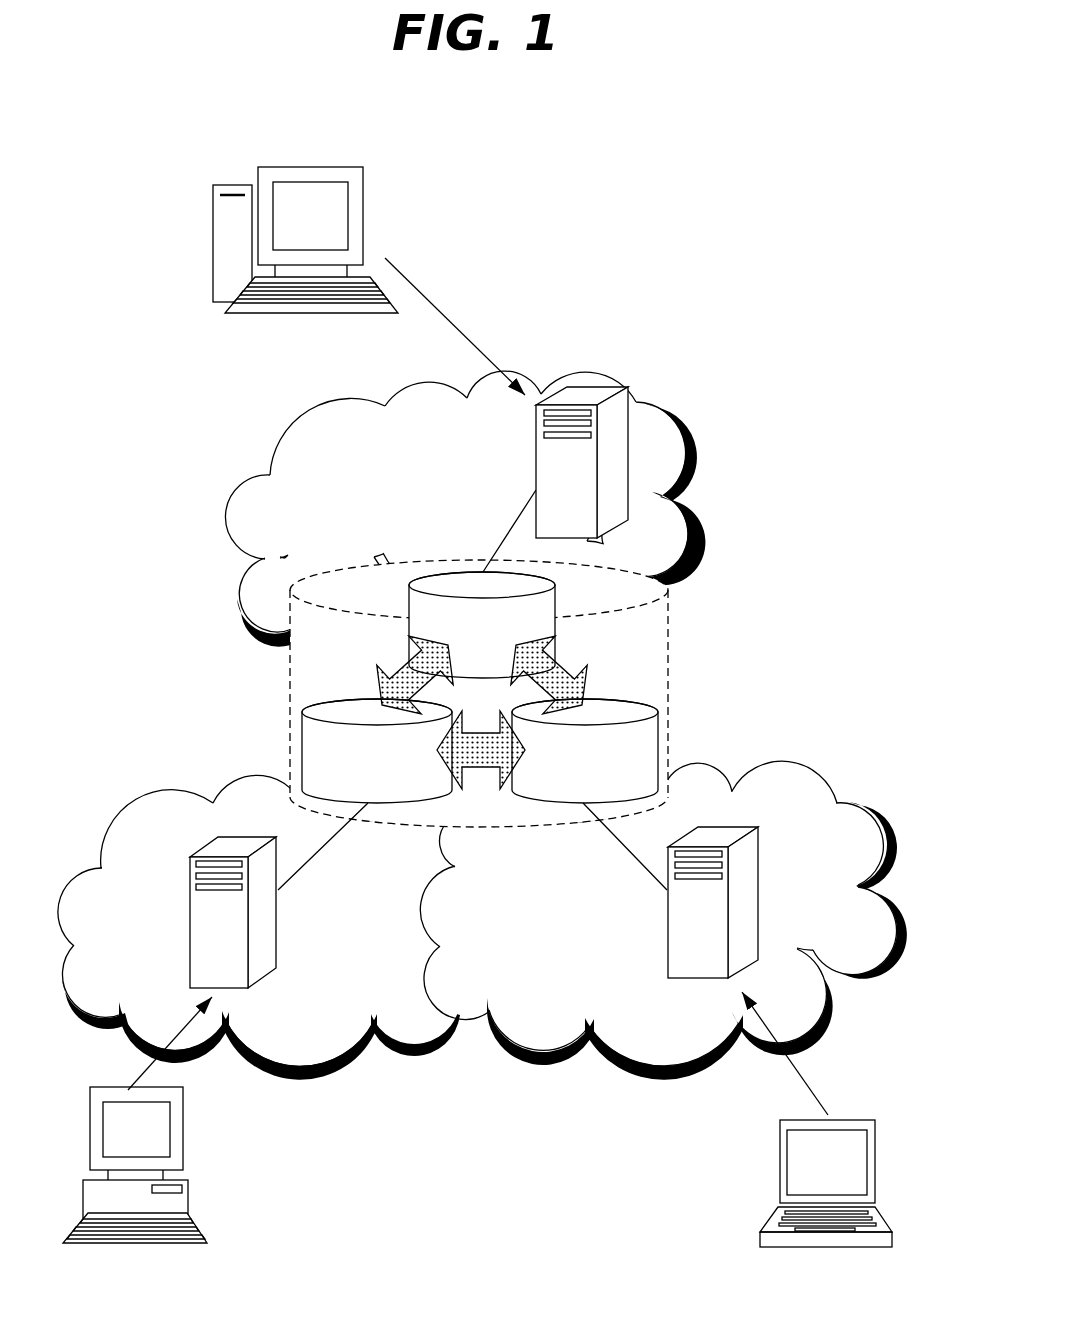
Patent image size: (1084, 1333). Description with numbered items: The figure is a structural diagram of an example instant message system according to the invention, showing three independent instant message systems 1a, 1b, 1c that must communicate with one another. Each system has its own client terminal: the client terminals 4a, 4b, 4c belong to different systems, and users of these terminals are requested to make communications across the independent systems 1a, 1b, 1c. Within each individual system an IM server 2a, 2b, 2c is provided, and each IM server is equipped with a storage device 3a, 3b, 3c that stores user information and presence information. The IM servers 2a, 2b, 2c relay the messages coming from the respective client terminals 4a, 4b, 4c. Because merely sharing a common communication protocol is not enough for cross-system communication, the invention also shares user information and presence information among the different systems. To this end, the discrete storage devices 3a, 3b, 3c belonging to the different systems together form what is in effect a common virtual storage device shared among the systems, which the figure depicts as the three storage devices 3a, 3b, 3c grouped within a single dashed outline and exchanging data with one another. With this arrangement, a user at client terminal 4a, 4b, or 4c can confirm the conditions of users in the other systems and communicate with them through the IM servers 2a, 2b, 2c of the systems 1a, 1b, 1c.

The instant message system 1a is at (240, 782).
The instant message system 1b is at (705, 775).
The instant message system 1c is at (292, 425).
The IM server 2a is at (193, 896).
The IM server 2b is at (755, 887).
The IM server 2c is at (582, 398).
The storage device 3a is at (377, 751).
The storage device 3b is at (585, 751).
The storage device 3c is at (482, 625).
The client terminal 4a is at (188, 1177).
The client terminal 4b is at (780, 1157).
The client terminal 4c is at (318, 163).